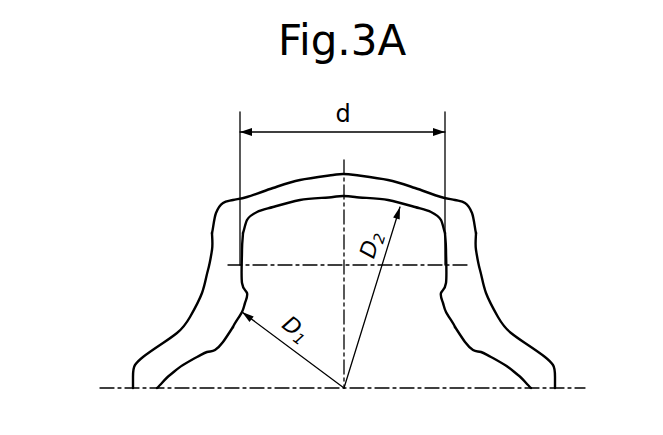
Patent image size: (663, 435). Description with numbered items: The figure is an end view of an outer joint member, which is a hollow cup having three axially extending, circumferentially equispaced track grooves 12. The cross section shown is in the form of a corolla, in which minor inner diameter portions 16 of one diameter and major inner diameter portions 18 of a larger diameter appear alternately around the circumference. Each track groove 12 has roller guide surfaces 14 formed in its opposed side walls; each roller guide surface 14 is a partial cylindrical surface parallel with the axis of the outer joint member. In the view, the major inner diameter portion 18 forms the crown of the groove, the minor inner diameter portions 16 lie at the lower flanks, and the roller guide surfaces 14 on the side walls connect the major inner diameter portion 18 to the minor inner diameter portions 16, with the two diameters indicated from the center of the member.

The track groove 12 is at (327, 251).
The roller guide surface 14 is at (432, 247).
The minor inner diameter portion 16 is at (232, 330).
The major inner diameter portion 18 is at (270, 216).